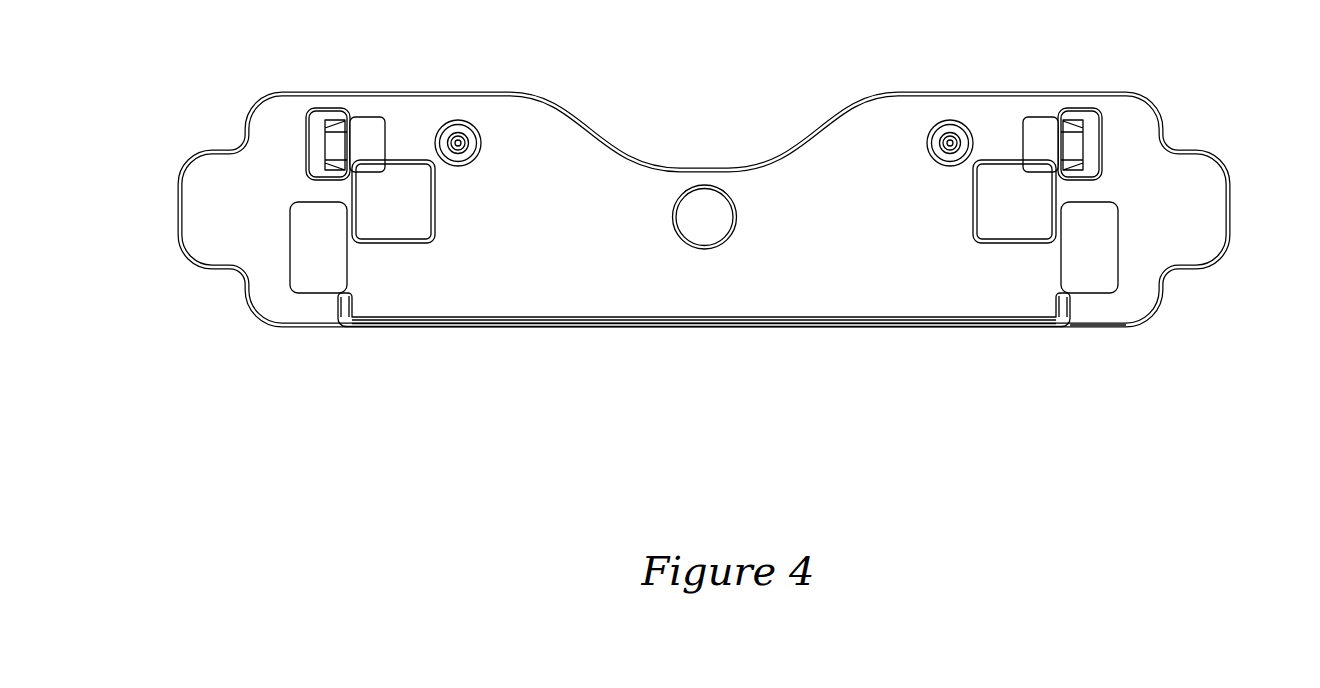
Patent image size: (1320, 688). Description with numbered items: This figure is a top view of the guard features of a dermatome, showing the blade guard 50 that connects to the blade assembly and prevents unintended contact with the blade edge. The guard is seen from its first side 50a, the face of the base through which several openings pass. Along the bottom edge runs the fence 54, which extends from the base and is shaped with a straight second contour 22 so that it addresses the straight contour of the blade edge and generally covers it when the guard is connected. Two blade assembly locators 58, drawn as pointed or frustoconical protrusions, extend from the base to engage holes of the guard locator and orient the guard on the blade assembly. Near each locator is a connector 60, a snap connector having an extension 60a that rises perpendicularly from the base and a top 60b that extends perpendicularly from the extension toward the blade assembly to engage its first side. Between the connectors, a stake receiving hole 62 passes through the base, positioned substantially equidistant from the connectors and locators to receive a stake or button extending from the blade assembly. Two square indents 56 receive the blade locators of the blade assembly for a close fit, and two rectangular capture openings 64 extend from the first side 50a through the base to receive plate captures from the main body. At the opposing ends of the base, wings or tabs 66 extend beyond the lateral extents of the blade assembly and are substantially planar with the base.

The blade guard 50 is at (1195, 91).
The first side of base 50a is at (852, 252).
The second contour 22 is at (447, 318).
The fence 54 is at (1032, 327).
The indent 56 is at (410, 213).
The blade assembly locator 58 is at (458, 143).
The connector 60 is at (307, 143).
The extension 60a is at (318, 118).
The top 60b is at (349, 128).
The stake receiving hole 62 is at (688, 214).
The capture opening 64 is at (296, 244).
The tab 66 is at (182, 173).